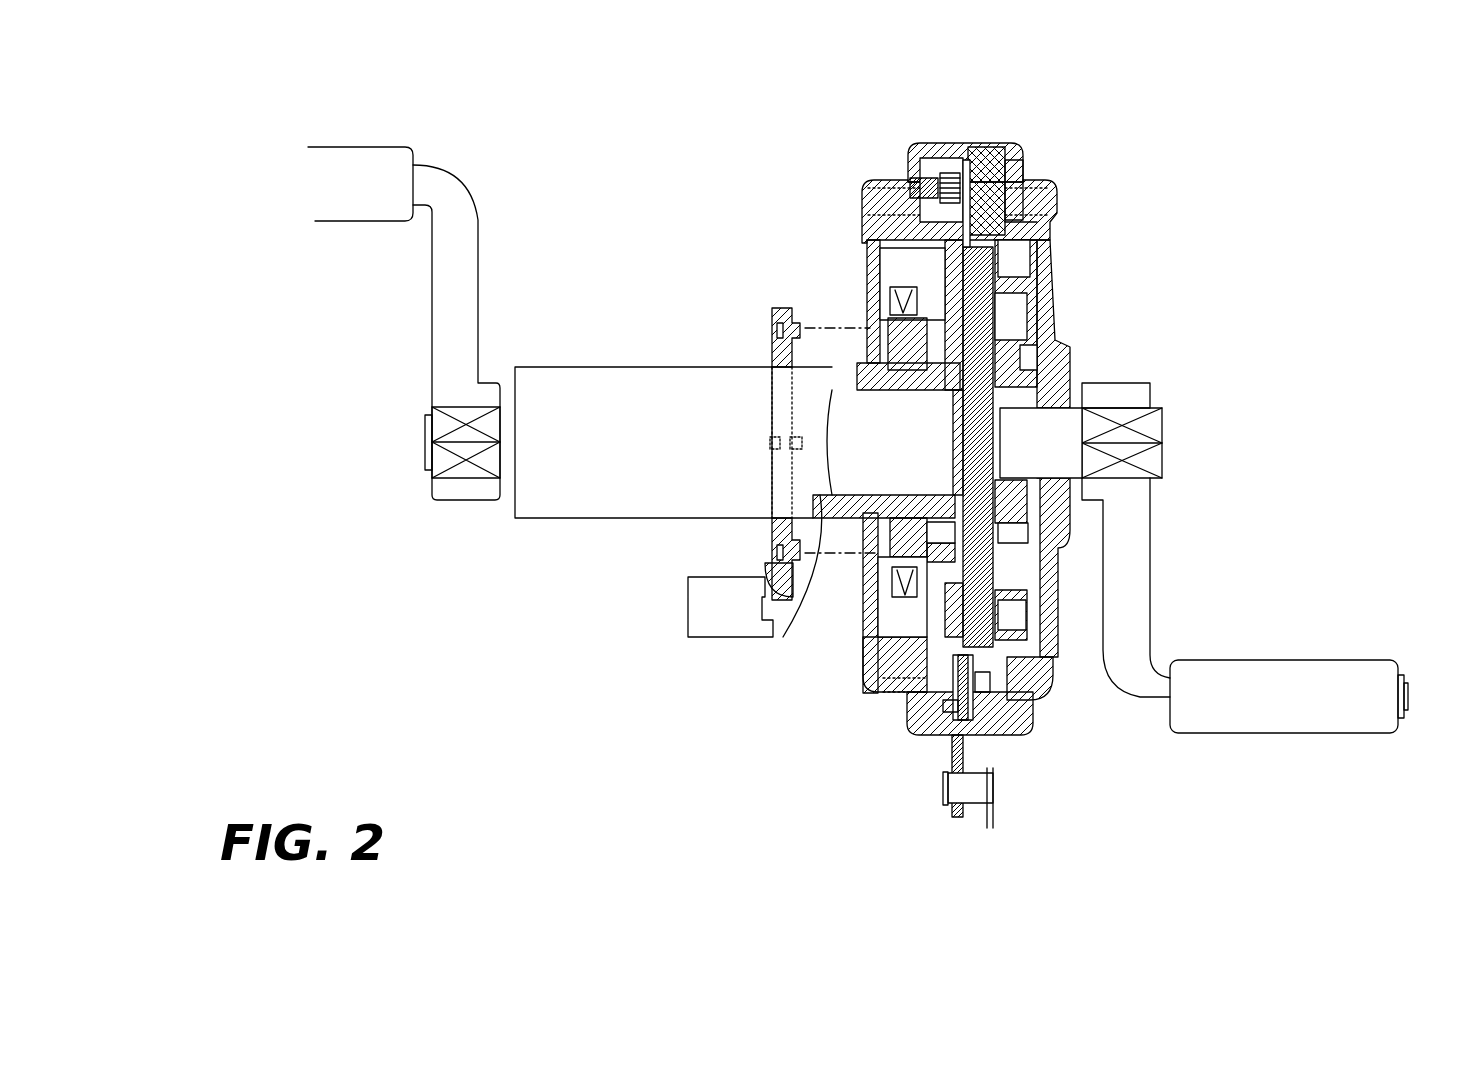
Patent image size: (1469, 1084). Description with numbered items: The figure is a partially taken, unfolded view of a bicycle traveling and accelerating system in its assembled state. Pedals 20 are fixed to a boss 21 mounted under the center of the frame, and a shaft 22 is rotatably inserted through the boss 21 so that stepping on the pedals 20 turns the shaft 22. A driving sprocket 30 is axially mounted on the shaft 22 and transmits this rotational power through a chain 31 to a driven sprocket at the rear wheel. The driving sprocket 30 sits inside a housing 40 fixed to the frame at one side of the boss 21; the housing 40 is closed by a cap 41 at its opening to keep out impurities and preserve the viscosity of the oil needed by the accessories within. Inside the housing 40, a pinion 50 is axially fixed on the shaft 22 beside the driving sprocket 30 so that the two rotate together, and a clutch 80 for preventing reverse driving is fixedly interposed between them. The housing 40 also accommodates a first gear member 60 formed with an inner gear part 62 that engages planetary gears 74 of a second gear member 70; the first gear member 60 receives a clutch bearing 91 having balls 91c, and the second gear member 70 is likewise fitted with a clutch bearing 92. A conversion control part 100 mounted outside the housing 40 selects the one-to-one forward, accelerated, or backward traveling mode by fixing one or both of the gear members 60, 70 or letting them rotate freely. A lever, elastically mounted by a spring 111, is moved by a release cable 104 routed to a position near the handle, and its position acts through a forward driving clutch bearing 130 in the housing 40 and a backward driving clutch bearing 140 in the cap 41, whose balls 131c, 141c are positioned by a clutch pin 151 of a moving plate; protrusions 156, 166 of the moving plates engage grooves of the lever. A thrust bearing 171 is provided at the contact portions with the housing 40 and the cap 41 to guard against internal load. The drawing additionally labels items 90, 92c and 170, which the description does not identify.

The pedals 20 is at (467, 260).
The boss 21 is at (563, 508).
The shaft 22 is at (850, 477).
The driving sprocket 30 is at (897, 337).
The chain 31 is at (890, 298).
The housing 40 is at (868, 190).
The cap 41 is at (997, 150).
The pinion 50 is at (1000, 442).
The first gear member 60 is at (1053, 683).
The inner gear part 62 is at (965, 245).
The second gear member 70 is at (945, 522).
The planetary gears 74 is at (1000, 210).
The clutch 80 is at (960, 635).
The gear unit 90 is at (1106, 434).
The clutch bearing 91 is at (1027, 280).
The balls 91c is at (1028, 252).
The clutch bearing 92 is at (1020, 377).
The second gear teeth 92c is at (1020, 347).
The conversion control part 100 is at (1040, 814).
The release cable 104 is at (990, 817).
The spring 111 is at (948, 757).
The forward driving clutch bearing 130 is at (1000, 165).
The balls 131c is at (1000, 195).
The backward driving clutch bearing 140 is at (927, 180).
The balls 141c is at (933, 213).
The clutch pin 151 is at (980, 675).
The protrusion 156 is at (965, 737).
The protrusion 166 is at (963, 647).
The support arm 170 is at (1065, 547).
The thrust bearing 171 is at (693, 590).